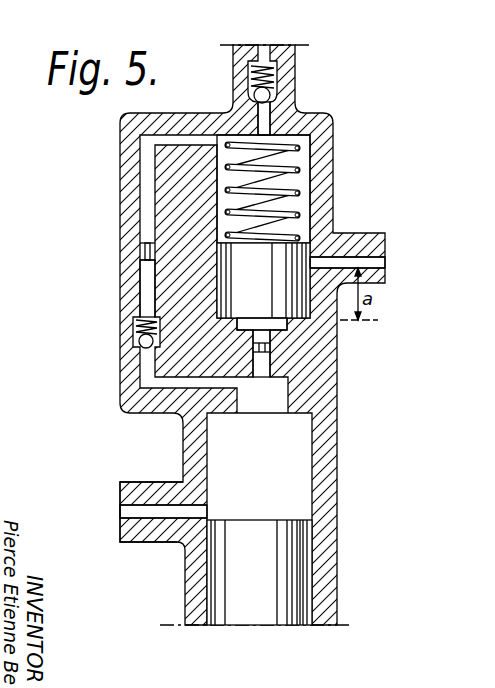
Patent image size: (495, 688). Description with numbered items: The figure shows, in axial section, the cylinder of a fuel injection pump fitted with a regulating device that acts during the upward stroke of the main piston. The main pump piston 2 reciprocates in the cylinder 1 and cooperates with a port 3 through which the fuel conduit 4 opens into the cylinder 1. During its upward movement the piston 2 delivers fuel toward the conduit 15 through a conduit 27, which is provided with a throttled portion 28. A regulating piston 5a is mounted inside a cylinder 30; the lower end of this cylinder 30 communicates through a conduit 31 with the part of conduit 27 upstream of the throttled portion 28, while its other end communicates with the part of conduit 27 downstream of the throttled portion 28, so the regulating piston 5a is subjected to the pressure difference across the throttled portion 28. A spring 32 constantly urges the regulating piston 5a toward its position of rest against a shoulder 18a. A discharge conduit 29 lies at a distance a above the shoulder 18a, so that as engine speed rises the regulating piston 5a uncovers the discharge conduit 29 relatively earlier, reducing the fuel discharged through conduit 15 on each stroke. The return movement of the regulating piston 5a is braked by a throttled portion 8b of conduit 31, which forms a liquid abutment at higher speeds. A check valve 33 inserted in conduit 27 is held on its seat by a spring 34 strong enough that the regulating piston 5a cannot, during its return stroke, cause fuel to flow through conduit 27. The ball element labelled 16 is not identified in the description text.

The cylinder 1 is at (309, 470).
The piston 2 is at (262, 580).
The port 3 is at (208, 514).
The fuel conduit 4 is at (125, 500).
The regulating piston 5a is at (268, 266).
The throttled portion 8b is at (267, 349).
The conduit 15 is at (264, 122).
The ball check valve 16 is at (272, 90).
The shoulder 18a is at (298, 320).
The conduit 27 is at (147, 297).
The throttled portion 28 is at (146, 252).
The discharge conduit 29 is at (368, 262).
The cylinder 30 is at (308, 183).
The conduit 31 is at (258, 356).
The spring 32 is at (296, 154).
The check valve 33 is at (140, 346).
The spring 34 is at (136, 323).